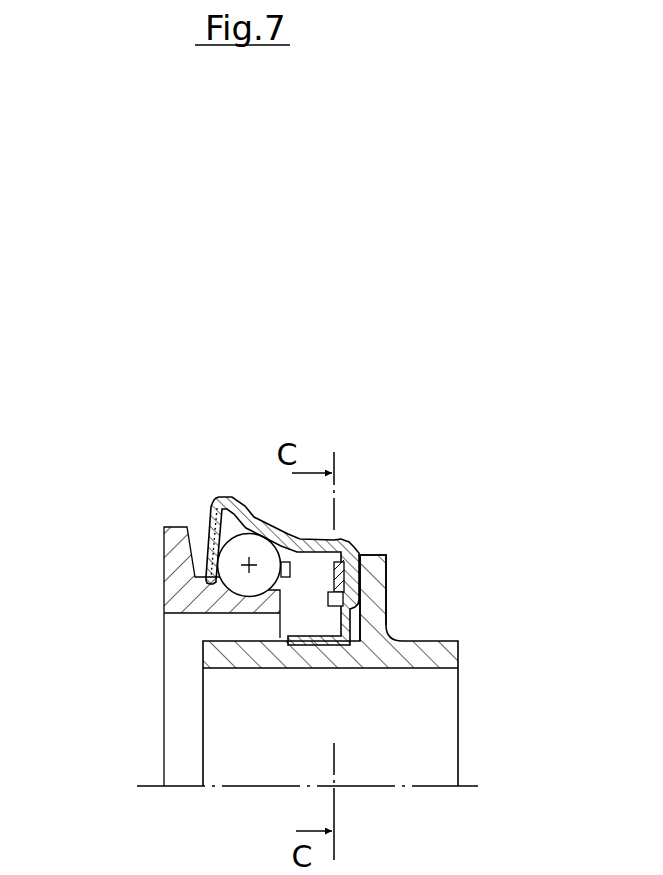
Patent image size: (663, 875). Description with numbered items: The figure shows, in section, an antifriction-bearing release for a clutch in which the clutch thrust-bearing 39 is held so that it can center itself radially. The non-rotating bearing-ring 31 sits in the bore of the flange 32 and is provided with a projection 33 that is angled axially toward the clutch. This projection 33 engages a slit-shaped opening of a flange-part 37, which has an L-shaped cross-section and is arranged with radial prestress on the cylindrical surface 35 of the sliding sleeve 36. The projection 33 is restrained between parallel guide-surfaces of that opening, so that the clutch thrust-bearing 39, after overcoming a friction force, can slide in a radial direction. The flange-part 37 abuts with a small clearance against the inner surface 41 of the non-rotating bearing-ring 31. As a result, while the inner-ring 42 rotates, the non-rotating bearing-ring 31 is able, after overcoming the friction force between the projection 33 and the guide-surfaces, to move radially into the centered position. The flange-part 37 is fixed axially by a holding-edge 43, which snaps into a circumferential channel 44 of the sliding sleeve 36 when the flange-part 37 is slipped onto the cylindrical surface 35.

The non-rotating bearing-ring 31 is at (244, 498).
The flange 32 is at (362, 563).
The projection 33 is at (353, 605).
The cylindrical surface 35 is at (235, 640).
The sliding sleeve 36 is at (433, 627).
The flange-part 37 is at (325, 632).
The clutch thrust-bearing 39 is at (192, 527).
The inner surface 41 is at (337, 572).
The inner-ring 42 is at (180, 582).
The holding-edge 43 is at (290, 645).
The circumferential channel 44 is at (330, 668).